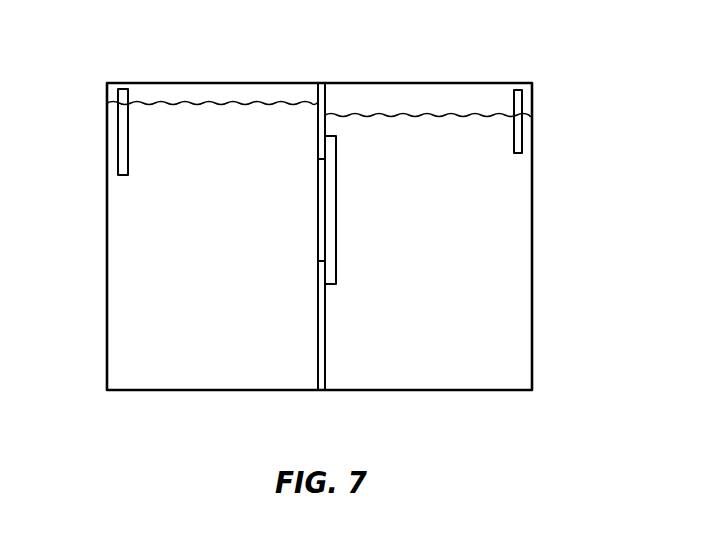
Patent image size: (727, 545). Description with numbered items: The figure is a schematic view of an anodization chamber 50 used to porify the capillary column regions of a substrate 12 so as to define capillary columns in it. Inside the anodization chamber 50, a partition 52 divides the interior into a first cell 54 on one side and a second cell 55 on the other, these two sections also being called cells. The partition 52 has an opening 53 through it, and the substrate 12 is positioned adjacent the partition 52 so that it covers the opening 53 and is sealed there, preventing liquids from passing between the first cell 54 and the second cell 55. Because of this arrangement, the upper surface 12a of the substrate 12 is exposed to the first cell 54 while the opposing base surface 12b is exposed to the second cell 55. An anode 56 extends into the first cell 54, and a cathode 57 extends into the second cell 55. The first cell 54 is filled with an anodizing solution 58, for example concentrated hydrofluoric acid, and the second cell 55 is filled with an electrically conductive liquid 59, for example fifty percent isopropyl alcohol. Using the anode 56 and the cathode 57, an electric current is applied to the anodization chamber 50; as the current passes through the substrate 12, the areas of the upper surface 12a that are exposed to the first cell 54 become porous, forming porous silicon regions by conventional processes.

The anodization chamber 50 is at (558, 130).
The partition 52 is at (320, 351).
The opening 53 is at (322, 162).
The substrate 12 is at (330, 227).
The upper surface 12a is at (322, 187).
The base surface 12b is at (337, 182).
The first cell 54 is at (203, 227).
The second cell 55 is at (440, 278).
The anode 56 is at (120, 122).
The cathode 57 is at (515, 87).
The anodizing solution 58 is at (212, 135).
The electrically conductive liquid 59 is at (450, 137).